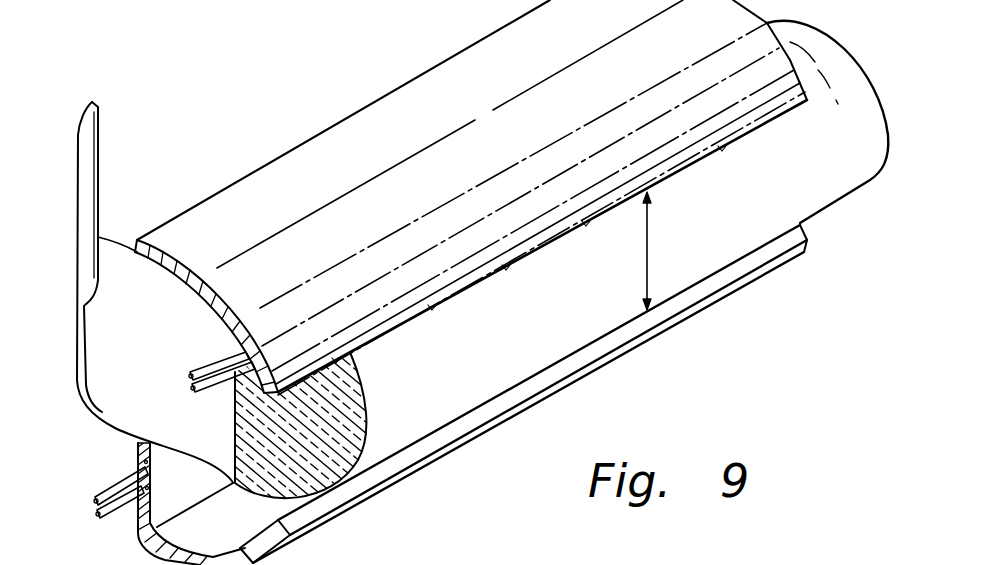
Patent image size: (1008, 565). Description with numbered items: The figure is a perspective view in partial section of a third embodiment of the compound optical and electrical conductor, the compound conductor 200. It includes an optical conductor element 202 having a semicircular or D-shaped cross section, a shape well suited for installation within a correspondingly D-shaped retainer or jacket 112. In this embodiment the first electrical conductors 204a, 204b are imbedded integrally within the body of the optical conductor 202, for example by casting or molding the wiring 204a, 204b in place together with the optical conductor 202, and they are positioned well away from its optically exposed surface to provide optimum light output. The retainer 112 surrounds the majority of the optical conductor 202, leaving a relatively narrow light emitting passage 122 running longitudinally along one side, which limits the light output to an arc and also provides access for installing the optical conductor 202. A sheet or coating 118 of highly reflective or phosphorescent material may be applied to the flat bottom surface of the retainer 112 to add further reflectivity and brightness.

The retainer or jacket 112 is at (478, 192).
The sheet or coating 118 is at (100, 168).
The light emitting passage 122 is at (648, 248).
The compound conductor 200 is at (717, 346).
The optical conductor element 202 is at (572, 315).
The first electrical conductor 204a is at (232, 352).
The first electrical conductor 204b is at (255, 356).